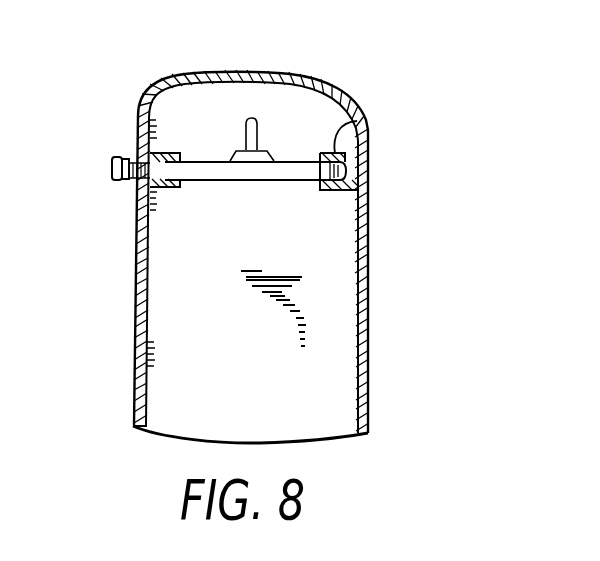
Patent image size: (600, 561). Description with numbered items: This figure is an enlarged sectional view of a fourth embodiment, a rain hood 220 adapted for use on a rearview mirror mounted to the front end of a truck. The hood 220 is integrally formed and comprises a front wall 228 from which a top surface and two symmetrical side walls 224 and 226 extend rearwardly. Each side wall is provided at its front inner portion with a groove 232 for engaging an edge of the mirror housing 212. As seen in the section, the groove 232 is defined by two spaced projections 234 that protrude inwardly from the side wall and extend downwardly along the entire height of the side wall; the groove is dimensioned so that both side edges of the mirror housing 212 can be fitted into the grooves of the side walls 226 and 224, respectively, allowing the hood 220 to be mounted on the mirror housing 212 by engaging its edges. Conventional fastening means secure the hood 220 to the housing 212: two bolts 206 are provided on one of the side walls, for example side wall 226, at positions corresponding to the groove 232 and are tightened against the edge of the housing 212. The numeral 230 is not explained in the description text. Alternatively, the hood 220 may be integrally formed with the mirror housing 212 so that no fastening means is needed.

The rain hood 220 is at (150, 85).
The front wall 228 is at (265, 72).
The spaced projections 234 is at (362, 118).
The groove 232 is at (368, 170).
The bolts 206 is at (117, 160).
The left bracket 230 is at (127, 181).
The housing 212 is at (270, 179).
The side wall 224 is at (371, 332).
The side wall 226 is at (134, 358).